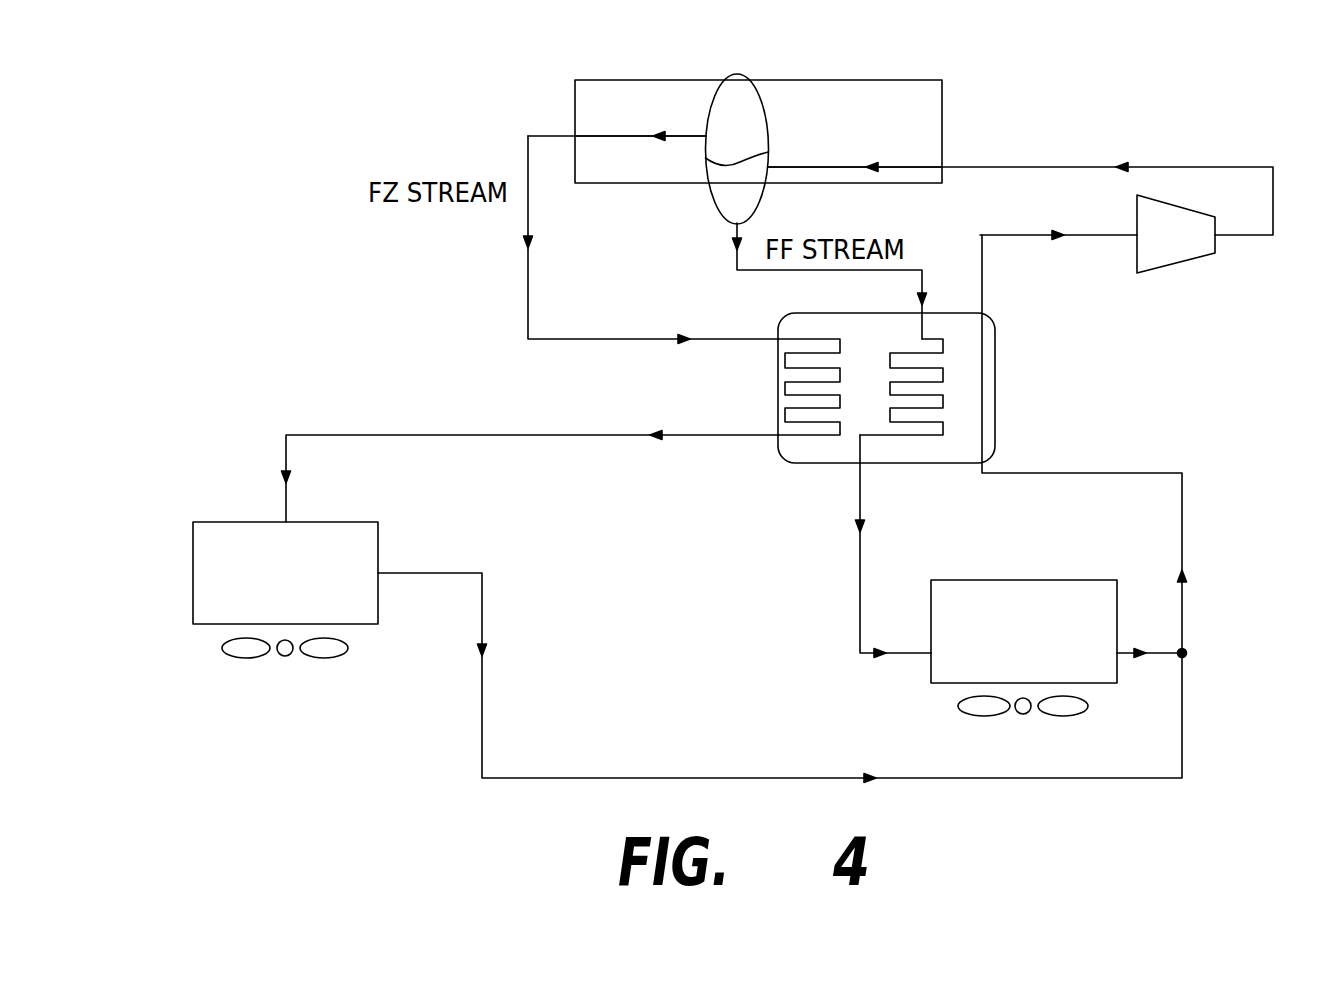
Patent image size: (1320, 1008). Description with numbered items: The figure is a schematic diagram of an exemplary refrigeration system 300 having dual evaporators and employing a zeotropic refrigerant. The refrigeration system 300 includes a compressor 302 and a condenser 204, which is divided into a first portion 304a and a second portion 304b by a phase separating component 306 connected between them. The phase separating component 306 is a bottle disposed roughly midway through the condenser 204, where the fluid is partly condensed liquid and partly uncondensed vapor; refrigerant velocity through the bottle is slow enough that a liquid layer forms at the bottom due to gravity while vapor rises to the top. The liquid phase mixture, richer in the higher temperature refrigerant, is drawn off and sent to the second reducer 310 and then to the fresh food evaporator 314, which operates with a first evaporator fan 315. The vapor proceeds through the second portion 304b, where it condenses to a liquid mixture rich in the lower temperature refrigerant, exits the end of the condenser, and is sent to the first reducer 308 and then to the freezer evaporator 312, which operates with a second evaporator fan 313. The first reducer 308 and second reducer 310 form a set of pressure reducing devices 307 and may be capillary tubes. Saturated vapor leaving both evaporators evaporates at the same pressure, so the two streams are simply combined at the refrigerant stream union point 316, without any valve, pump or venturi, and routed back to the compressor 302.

The refrigeration system 300 is at (312, 137).
The condenser 204 is at (942, 116).
The first portion 304a is at (855, 144).
The second portion 304b is at (640, 114).
The phase separating component 306 is at (737, 73).
The compressor 302 is at (1216, 240).
The set of pressure reducing devices 307 is at (995, 357).
The first reducer 308 is at (785, 383).
The second reducer 310 is at (943, 397).
The freezer evaporator 312 is at (220, 522).
The second evaporator fan 313 is at (320, 658).
The fresh food evaporator 314 is at (992, 580).
The first evaporator fan 315 is at (980, 713).
The refrigerant stream union point 316 is at (1193, 657).